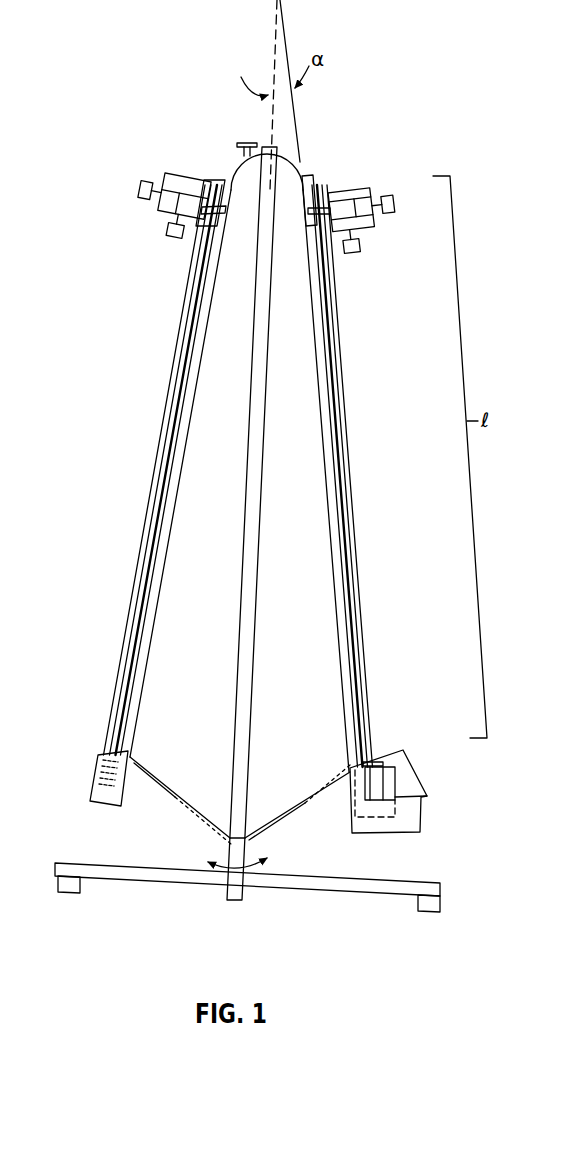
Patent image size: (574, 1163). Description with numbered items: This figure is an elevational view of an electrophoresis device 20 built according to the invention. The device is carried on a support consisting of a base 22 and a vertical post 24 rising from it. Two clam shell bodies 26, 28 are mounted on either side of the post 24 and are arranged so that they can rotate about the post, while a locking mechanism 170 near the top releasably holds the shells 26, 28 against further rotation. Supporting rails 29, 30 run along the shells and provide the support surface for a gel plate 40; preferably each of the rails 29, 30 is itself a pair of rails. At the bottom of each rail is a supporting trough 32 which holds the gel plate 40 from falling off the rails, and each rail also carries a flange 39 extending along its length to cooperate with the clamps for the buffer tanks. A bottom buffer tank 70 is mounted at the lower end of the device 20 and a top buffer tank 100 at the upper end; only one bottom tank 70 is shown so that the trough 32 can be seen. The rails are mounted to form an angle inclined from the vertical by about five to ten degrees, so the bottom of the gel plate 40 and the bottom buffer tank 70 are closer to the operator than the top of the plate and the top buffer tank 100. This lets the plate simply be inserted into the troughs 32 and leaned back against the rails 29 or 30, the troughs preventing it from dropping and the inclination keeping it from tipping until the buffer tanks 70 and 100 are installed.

The electrophoresis device 20 is at (162, 354).
The base 22 is at (342, 885).
The vertical post 24 is at (230, 848).
The clam shell body 26 is at (217, 565).
The clam shell body 28 is at (304, 567).
The supporting rail 29 is at (156, 592).
The supporting rail 30 is at (342, 574).
The supporting trough 32 is at (95, 809).
The flange 39 is at (170, 452).
The gel plate 40 is at (159, 508).
The bottom buffer tank 70 is at (404, 826).
The top buffer tank 100 is at (369, 173).
The locking mechanism 170 is at (240, 141).